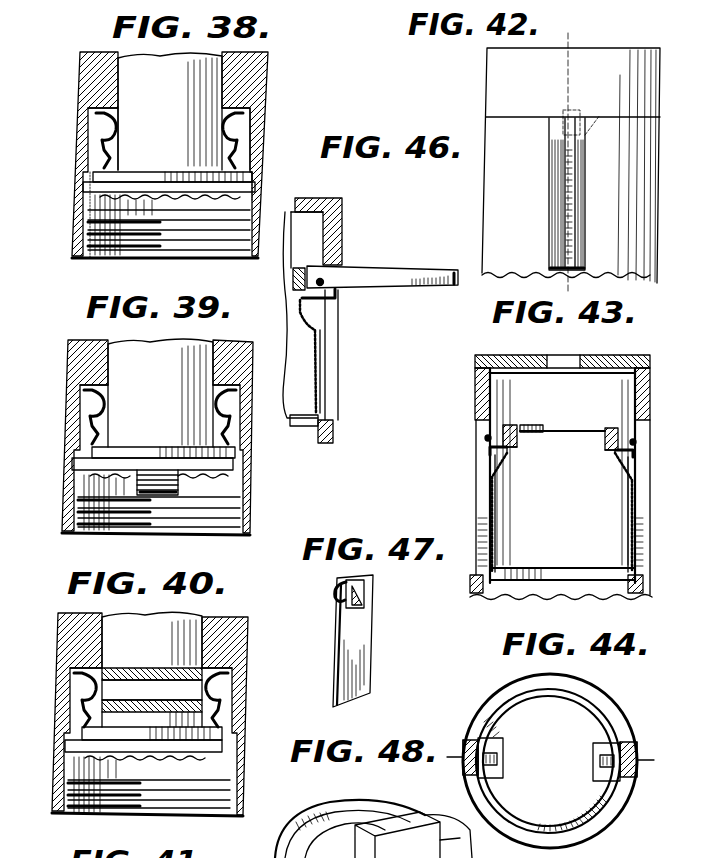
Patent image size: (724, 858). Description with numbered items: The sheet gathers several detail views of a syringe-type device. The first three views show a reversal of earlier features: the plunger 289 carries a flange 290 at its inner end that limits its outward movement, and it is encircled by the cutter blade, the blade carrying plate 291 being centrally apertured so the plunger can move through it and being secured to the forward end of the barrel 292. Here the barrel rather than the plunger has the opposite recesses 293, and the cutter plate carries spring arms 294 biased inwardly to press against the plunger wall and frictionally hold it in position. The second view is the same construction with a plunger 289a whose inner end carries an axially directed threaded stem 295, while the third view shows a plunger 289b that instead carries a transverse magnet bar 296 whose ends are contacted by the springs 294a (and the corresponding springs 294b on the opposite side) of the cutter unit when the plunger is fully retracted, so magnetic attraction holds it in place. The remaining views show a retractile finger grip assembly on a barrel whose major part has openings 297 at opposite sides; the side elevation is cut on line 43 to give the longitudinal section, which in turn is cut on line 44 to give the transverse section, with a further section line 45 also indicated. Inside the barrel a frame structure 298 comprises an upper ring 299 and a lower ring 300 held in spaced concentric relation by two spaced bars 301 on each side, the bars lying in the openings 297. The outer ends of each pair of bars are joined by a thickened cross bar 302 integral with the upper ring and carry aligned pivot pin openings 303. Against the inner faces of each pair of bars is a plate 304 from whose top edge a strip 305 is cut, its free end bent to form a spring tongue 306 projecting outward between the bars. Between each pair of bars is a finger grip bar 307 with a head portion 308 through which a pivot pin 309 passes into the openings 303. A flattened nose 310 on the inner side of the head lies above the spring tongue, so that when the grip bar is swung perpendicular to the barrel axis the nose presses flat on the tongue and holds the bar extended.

In FIG. 38, the plunger 289 is at (180, 92).
In FIG. 39, the plunger 289a is at (178, 380).
In FIG. 40, the plunger 289b is at (165, 652).
In FIG. 38, the flange 290 is at (257, 186).
In FIG. 38, the blade carrying plate 291 is at (262, 174).
In FIG. 38, the barrel 292 is at (262, 90).
In FIG. 38, the recesses 293 is at (252, 112).
In FIG. 38, the spring arms 294 is at (240, 133).
In FIG. 40, the springs 294a is at (220, 697).
In FIG. 40, the spring 294b is at (80, 697).
In FIG. 39, the threaded stem 295 is at (178, 496).
In FIG. 40, the magnet bar 296 is at (150, 693).
In FIG. 42, the openings 297 is at (552, 196).
In FIG. 43, the openings 297 is at (476, 575).
In FIG. 44, the openings 297 is at (470, 740).
In FIG. 46, the frame structure 298 is at (292, 266).
In FIG. 43, the frame structure 298 is at (552, 425).
In FIG. 44, the frame structure 298 is at (540, 697).
In FIG. 48, the frame structure 298 is at (296, 810).
In FIG. 46, the upper ring 299 is at (292, 278).
In FIG. 43, the upper ring 299 is at (552, 435).
In FIG. 44, the upper ring 299 is at (540, 826).
In FIG. 48, the upper ring 299 is at (344, 808).
In FIG. 46, the lower ring 300 is at (293, 428).
In FIG. 43, the lower ring 300 is at (550, 590).
In FIG. 46, the bars 301 is at (345, 292).
In FIG. 42, the bars 301 is at (557, 168).
In FIG. 43, the bars 301 is at (562, 475).
In FIG. 44, the bars 301 is at (448, 770).
In FIG. 46, the cross bar 302 is at (318, 282).
In FIG. 43, the cross bar 302 is at (613, 430).
In FIG. 44, the cross bar 302 is at (593, 762).
In FIG. 48, the cross bar 302 is at (345, 857).
In FIG. 42, the pivot pin openings 303 is at (598, 130).
In FIG. 48, the pivot pin openings 303 is at (440, 830).
In FIG. 46, the plate 304 is at (322, 358).
In FIG. 43, the plate 304 is at (628, 541).
In FIG. 47, the plate 304 is at (366, 656).
In FIG. 46, the strip 305 is at (340, 320).
In FIG. 43, the strip 305 is at (496, 472).
In FIG. 47, the strip 305 is at (365, 604).
In FIG. 46, the spring tongue 306 is at (340, 302).
In FIG. 43, the spring tongue 306 is at (486, 447).
In FIG. 47, the spring tongue 306 is at (352, 574).
In FIG. 46, the finger grip bar 307 is at (408, 274).
In FIG. 42, the finger grip bar 307 is at (565, 240).
In FIG. 43, the finger grip bar 307 is at (661, 542).
In FIG. 44, the finger grip bar 307 is at (490, 750).
In FIG. 46, the head portion 308 is at (342, 251).
In FIG. 43, the head portion 308 is at (498, 440).
In FIG. 46, the pivot pin 309 is at (315, 290).
In FIG. 42, the pivot pin 309 is at (563, 120).
In FIG. 43, the pivot pin 309 is at (486, 436).
In FIG. 43, the nose 310 is at (613, 447).
In FIG. 42, the section line 43— 43 is at (568, 36).
In FIG. 43, the section line 44— 44 is at (685, 430).
In FIG. 43, the section line 45 is at (452, 511).